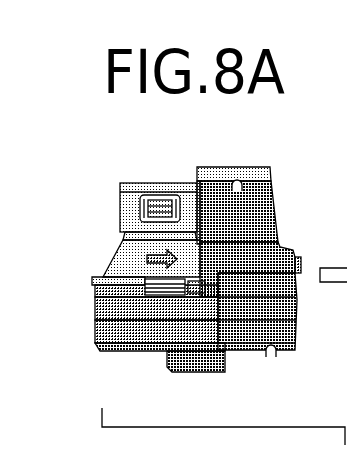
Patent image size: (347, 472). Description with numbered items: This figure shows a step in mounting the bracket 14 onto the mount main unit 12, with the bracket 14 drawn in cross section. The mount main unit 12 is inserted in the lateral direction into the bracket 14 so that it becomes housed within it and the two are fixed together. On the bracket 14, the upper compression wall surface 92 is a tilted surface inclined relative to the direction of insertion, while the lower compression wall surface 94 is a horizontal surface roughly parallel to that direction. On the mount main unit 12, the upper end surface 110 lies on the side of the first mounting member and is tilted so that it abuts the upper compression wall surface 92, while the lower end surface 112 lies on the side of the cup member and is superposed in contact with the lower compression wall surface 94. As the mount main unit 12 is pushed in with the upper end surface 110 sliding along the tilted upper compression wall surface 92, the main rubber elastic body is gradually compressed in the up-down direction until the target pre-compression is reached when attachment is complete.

The mount main unit 12 is at (188, 268).
The bracket 14 is at (293, 197).
The upper compression wall surface 92 is at (238, 185).
The lower compression wall surface 94 is at (270, 357).
The upper end surface 110 is at (160, 184).
The lower end surface 112 is at (117, 355).